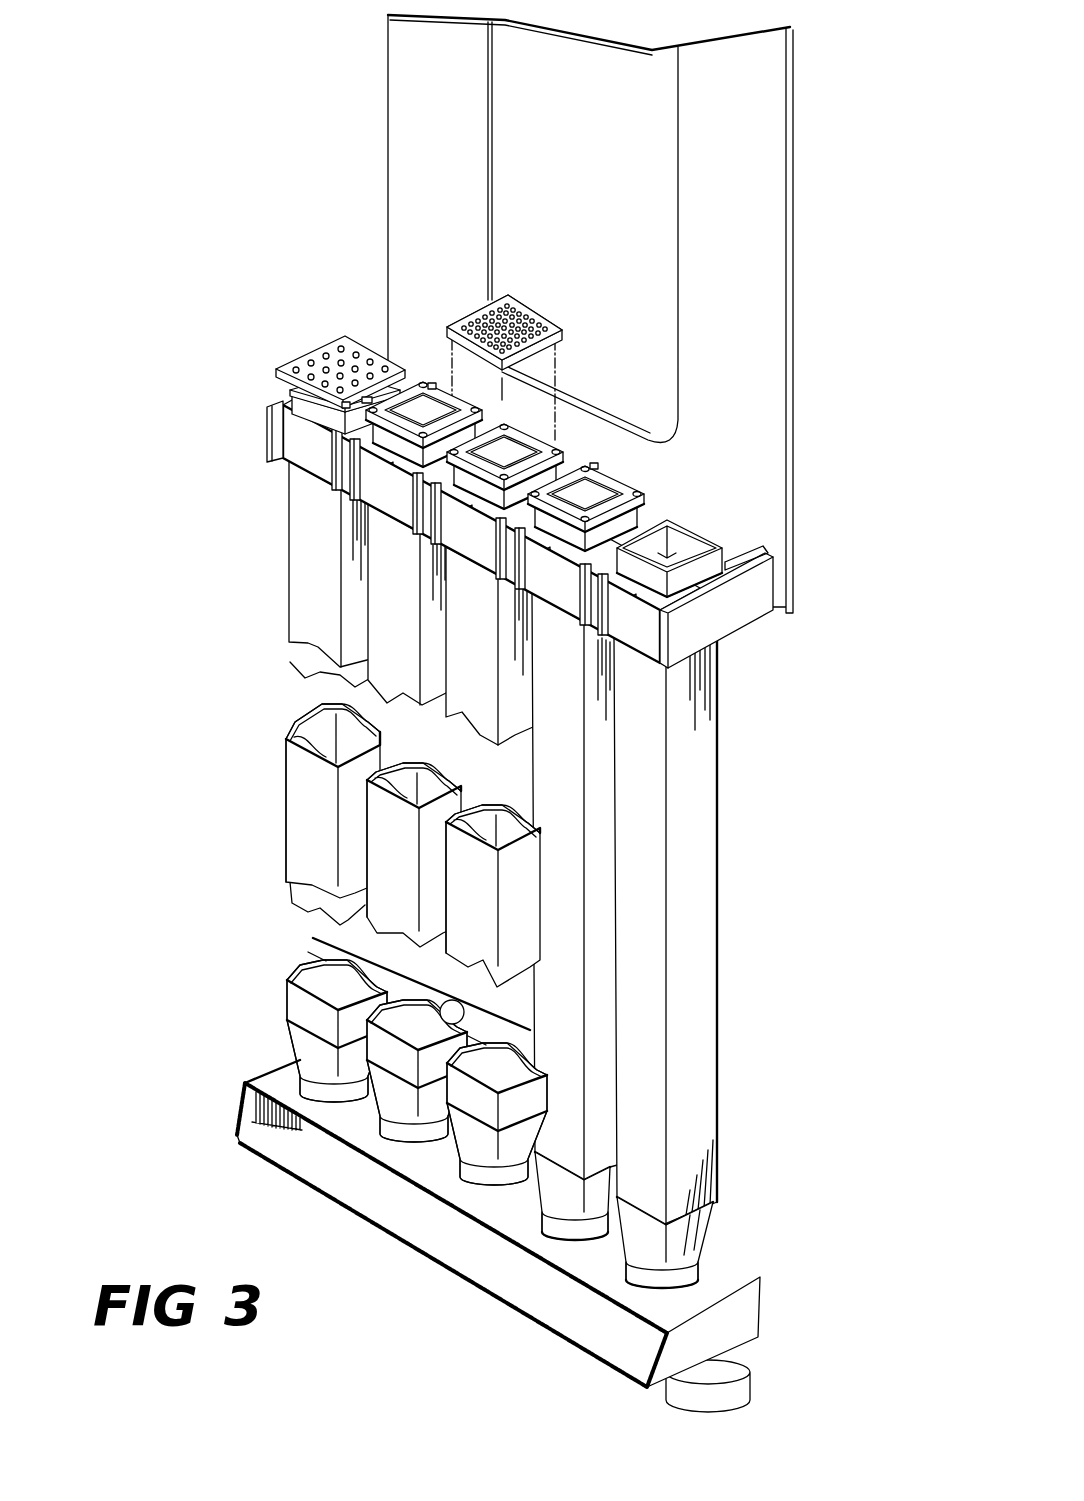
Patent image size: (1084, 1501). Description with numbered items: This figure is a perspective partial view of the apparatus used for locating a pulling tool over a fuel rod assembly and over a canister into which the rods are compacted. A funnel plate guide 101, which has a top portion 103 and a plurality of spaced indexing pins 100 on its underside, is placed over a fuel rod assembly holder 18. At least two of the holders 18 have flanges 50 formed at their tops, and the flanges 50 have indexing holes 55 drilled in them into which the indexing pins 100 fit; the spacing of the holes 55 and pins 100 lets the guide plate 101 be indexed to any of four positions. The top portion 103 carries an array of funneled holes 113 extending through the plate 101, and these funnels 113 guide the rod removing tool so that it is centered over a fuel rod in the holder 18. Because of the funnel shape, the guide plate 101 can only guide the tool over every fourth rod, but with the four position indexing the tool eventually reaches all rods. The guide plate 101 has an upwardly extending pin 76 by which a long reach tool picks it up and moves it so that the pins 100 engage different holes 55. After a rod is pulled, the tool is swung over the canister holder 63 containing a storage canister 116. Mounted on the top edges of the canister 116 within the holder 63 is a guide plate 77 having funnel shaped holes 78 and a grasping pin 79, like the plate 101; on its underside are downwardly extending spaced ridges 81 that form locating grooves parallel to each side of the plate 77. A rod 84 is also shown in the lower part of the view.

The fuel rod assembly holder 18 is at (700, 795).
The flange 50 is at (627, 482).
The indexing hole 55 is at (348, 402).
The canister holder 63 is at (297, 600).
The upwardly extending pin 76 is at (488, 275).
The guide plate 77 is at (312, 390).
The funnel shaped hole 78 is at (305, 357).
The grasping pin 79 is at (340, 362).
The ridge 81 is at (296, 392).
The rod 84 is at (460, 1020).
The indexing pin 100 is at (558, 342).
The funnel plate guide 101 is at (527, 297).
The top portion 103 is at (550, 327).
The funneled hole 113 is at (487, 312).
The storage canister 116 is at (303, 905).